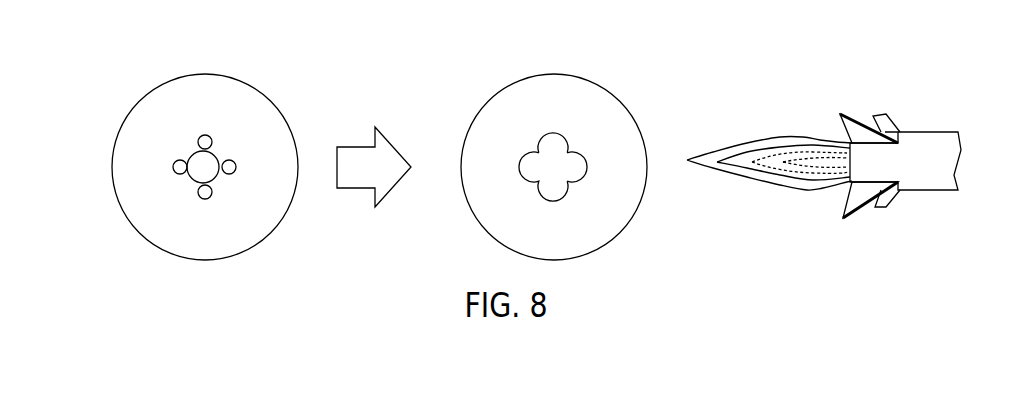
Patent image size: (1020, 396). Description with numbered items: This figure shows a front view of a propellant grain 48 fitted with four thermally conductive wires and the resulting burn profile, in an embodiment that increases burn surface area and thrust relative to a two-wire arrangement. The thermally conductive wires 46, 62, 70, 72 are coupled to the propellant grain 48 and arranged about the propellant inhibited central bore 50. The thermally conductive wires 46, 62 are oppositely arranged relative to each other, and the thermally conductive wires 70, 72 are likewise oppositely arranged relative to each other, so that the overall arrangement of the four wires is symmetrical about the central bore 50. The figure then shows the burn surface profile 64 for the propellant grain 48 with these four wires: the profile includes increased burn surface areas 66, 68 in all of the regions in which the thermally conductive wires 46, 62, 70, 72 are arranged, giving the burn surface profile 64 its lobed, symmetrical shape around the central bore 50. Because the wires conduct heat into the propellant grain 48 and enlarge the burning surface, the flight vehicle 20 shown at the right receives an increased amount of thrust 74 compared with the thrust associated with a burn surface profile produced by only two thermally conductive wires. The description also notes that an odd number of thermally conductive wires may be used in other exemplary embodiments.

The flight vehicle 20 is at (925, 150).
The first thermally conductive wire 46 is at (197, 143).
The propellant grain 48 is at (165, 225).
The propellant inhibited central bore 50 is at (190, 157).
The second thermally conductive wire 62 is at (198, 194).
The burn surface profile 64 is at (539, 127).
The burn surface area 66 is at (553, 133).
The burn surface area 68 is at (588, 167).
The thermally conductive wire 70 is at (175, 167).
The thermally conductive wire 72 is at (235, 167).
The thrust 74 is at (824, 160).